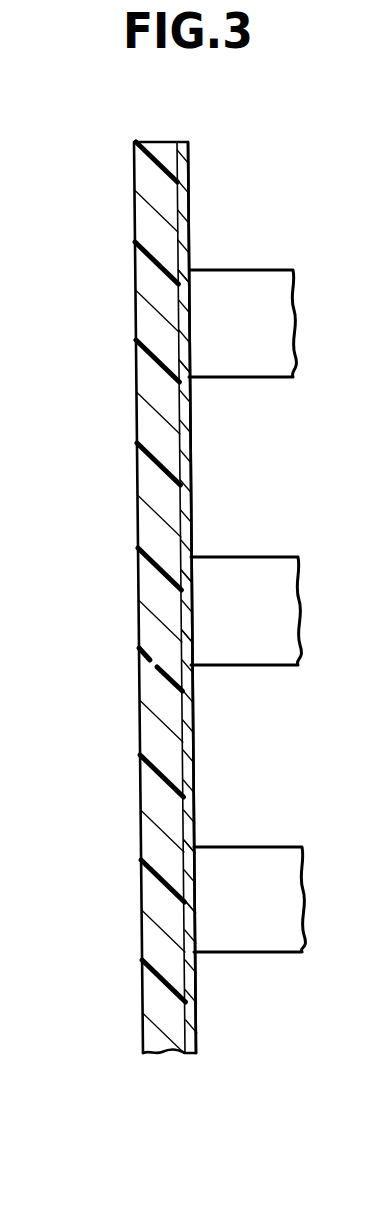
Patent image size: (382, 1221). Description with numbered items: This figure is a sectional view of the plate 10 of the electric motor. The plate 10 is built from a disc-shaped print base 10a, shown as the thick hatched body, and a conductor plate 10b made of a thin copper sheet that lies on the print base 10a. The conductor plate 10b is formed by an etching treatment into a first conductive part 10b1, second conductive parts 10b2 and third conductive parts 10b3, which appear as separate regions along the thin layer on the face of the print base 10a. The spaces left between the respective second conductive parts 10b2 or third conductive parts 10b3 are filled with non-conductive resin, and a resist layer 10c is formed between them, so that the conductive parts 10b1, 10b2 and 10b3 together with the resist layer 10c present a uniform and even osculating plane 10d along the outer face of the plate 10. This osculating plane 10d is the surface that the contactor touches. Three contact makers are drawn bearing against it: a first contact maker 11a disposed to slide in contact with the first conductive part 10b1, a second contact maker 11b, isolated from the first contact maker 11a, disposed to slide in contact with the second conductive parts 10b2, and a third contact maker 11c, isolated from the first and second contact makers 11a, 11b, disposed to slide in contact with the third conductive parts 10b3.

The plate 10 is at (128, 197).
The print base 10a is at (153, 670).
The conductor plate 10b is at (186, 230).
The first conductive part 10b1 is at (188, 917).
The second conductive parts 10b2 is at (187, 600).
The third conductive parts 10b3 is at (186, 312).
The resist layer 10c is at (186, 174).
The osculating plane 10d is at (190, 440).
The first contact maker 11a is at (250, 855).
The second contact maker 11b is at (268, 650).
The third contact maker 11c is at (268, 365).